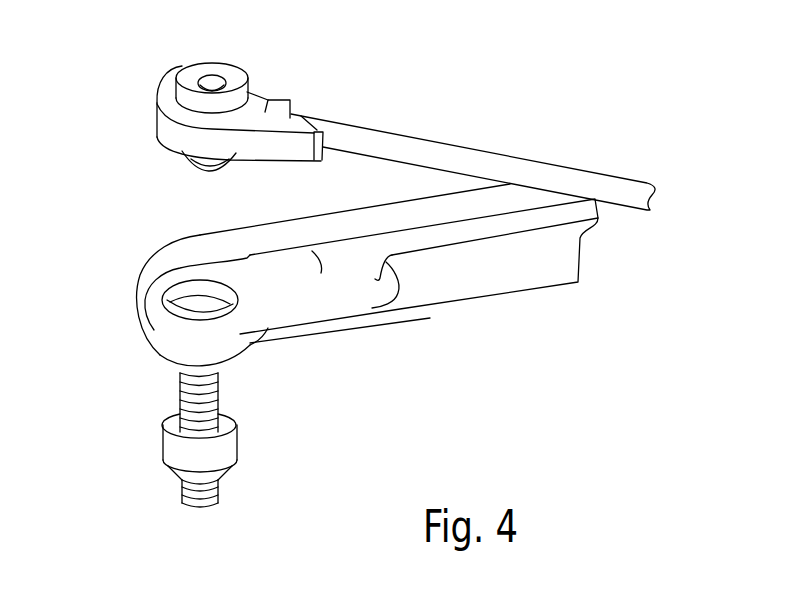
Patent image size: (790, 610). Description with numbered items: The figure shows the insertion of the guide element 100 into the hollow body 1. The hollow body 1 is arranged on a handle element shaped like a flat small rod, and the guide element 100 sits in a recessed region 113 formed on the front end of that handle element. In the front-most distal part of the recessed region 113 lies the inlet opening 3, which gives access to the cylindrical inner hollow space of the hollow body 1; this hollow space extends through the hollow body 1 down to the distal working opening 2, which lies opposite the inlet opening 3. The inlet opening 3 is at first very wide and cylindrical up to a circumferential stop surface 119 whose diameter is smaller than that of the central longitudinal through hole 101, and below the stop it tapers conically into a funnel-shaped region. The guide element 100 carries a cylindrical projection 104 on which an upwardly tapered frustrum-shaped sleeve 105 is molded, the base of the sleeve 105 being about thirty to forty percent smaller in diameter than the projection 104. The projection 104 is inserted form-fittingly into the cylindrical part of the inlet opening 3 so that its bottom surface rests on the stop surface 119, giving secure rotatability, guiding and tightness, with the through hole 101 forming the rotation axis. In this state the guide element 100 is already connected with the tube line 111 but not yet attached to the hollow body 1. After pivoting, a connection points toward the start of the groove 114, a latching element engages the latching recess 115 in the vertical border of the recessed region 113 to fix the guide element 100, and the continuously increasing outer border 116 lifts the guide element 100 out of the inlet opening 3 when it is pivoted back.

The guide element 100 is at (141, 136).
The central longitudinal through hole 101 is at (214, 83).
The cylindrical projection 104 is at (192, 166).
The frustrum-shaped sleeve 105 is at (208, 167).
The tube line 111 is at (448, 160).
The recessed region 113 is at (357, 296).
The groove 114 is at (503, 223).
The latching recess 115 is at (282, 272).
The outer border 116 is at (145, 263).
The circumferential stop surface 119 is at (200, 293).
The inlet opening 3 is at (180, 300).
The hollow body 1 is at (222, 402).
The working opening 2 is at (198, 512).